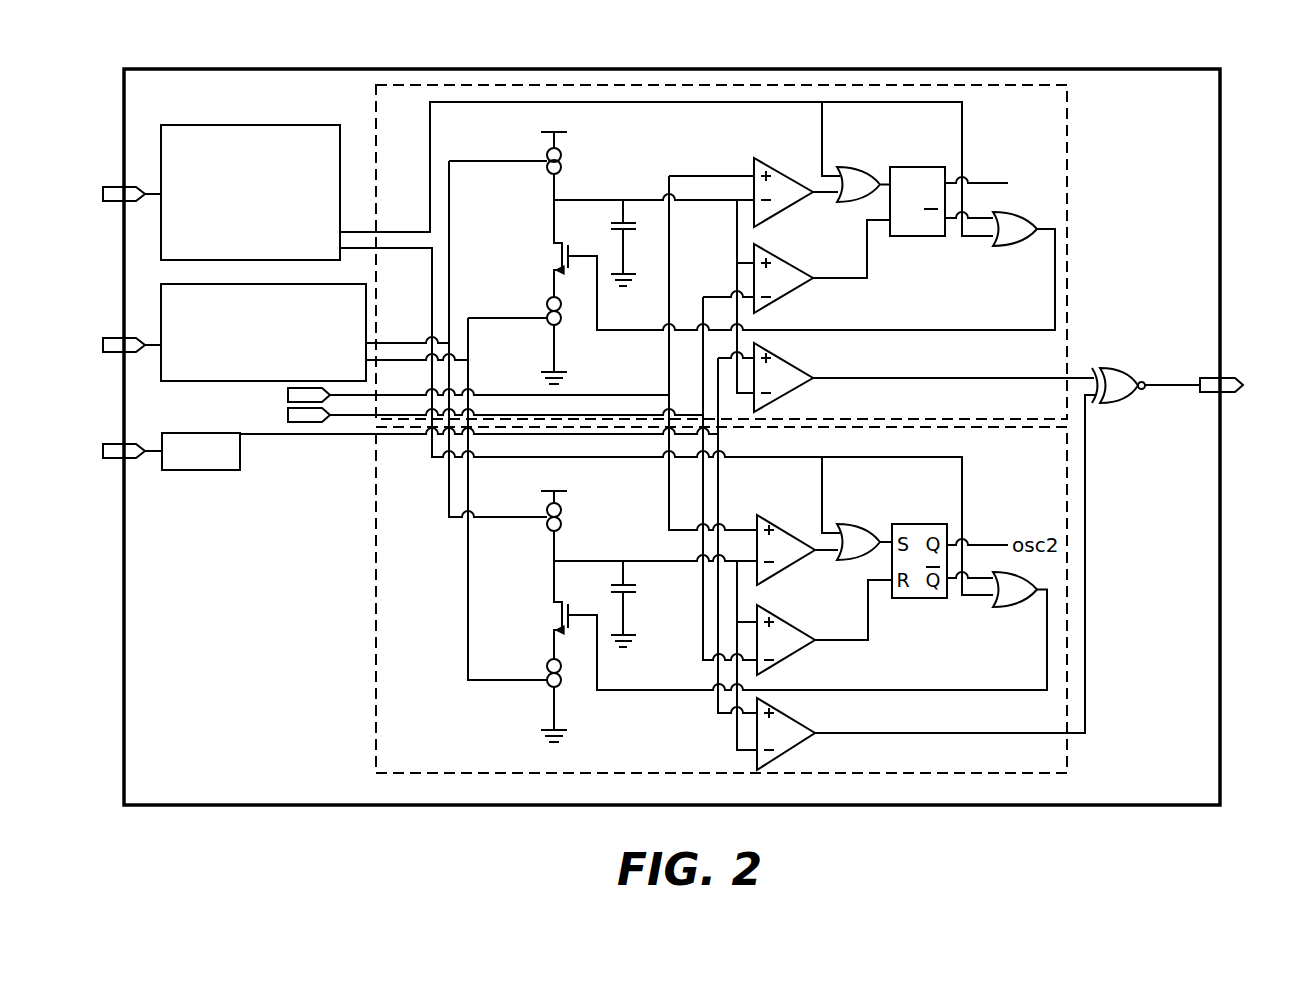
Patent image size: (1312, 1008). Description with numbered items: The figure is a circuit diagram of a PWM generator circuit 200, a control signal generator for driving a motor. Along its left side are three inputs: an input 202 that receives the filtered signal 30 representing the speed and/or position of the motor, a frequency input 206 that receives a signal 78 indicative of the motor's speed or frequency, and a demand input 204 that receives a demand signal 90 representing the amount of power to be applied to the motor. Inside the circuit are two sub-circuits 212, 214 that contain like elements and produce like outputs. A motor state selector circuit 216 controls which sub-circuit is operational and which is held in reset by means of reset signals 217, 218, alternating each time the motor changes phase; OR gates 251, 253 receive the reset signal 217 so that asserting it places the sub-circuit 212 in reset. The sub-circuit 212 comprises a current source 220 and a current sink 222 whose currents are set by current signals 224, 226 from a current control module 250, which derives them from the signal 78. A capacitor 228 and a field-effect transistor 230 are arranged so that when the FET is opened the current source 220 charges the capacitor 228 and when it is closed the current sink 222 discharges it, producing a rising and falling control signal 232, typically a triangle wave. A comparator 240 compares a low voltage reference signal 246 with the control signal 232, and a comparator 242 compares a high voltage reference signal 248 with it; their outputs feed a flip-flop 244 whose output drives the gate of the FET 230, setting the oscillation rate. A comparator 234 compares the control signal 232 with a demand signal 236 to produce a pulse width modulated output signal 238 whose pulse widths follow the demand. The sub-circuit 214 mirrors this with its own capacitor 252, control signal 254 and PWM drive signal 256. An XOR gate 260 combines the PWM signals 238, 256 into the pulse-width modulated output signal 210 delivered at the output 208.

The PWM generator circuit 200 is at (1258, 90).
The filtered signal 30 is at (152, 193).
The input 202 is at (118, 186).
The frequency input 206 is at (118, 338).
The demand input 204 is at (118, 444).
The signal 78 is at (152, 350).
The demand signal 90 is at (152, 459).
The sub-circuit 212 is at (375, 110).
The sub-circuit 214 is at (376, 640).
The motor state selector circuit 216 is at (232, 244).
The current control module 250 is at (245, 370).
The reset signal 217 is at (400, 230).
The reset signal 218 is at (406, 251).
The current source 220 is at (548, 151).
The current source 222 is at (547, 312).
The current signal 224 is at (488, 163).
The current signal 226 is at (468, 352).
The capacitor 228 is at (611, 226).
The field-effect transistor 230 is at (560, 258).
The control signal 232 is at (648, 199).
The comparator 234 is at (790, 360).
The demand signal 236 is at (255, 437).
The pulse width modulated output signal 238 is at (905, 380).
The comparator 240 is at (783, 164).
The comparator 242 is at (783, 255).
The flip-flop 244 is at (918, 167).
The low voltage reference signal 246 is at (621, 394).
The high voltage reference signal 248 is at (712, 297).
The OR gate 251 is at (1010, 250).
The capacitor 252 is at (636, 590).
The OR gate 253 is at (865, 172).
The control signal 254 is at (630, 560).
The PWM drive signal 256 is at (925, 735).
The XOR gate 260 is at (1122, 365).
The output 208 is at (1233, 378).
The pulse-width modulated output signal 210 is at (1170, 383).